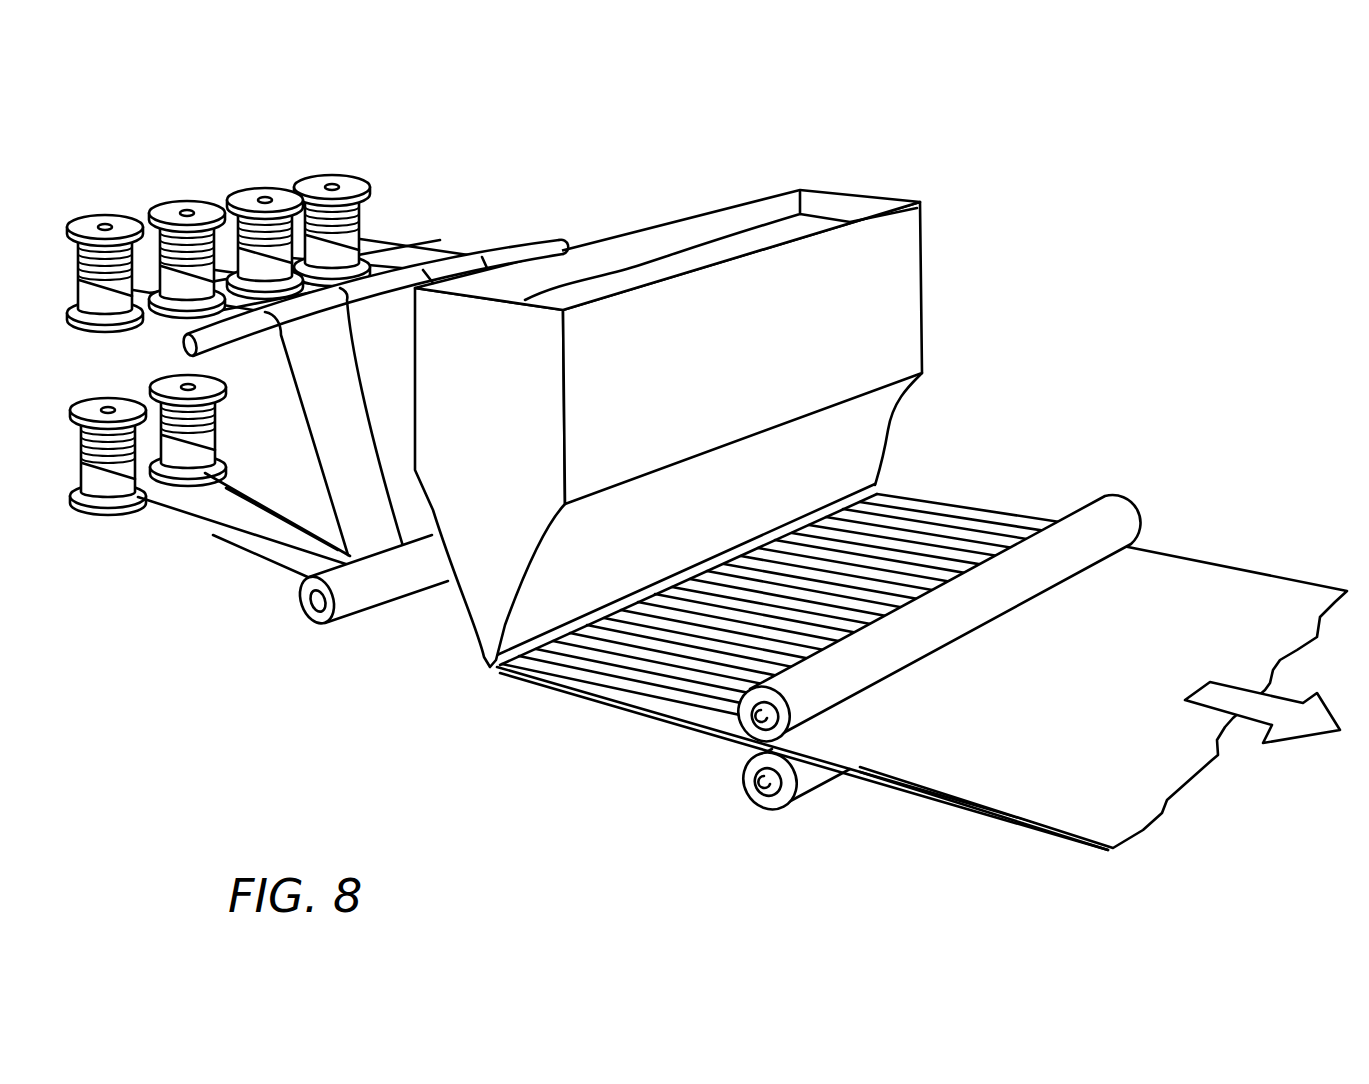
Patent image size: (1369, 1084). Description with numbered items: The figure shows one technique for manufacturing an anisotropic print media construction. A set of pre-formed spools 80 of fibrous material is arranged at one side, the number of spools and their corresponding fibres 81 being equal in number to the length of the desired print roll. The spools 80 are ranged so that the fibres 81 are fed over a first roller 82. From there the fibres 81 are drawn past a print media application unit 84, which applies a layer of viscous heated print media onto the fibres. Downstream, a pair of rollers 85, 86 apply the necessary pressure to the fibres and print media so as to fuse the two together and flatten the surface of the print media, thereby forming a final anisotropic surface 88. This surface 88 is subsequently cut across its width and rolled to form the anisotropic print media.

The spools 80 is at (82, 197).
The fibres 81 is at (278, 520).
The first roller 82 is at (352, 620).
The print media application unit 84 is at (893, 288).
The roller 85 is at (823, 692).
The roller 86 is at (807, 777).
The anisotropic surface 88 is at (1200, 613).